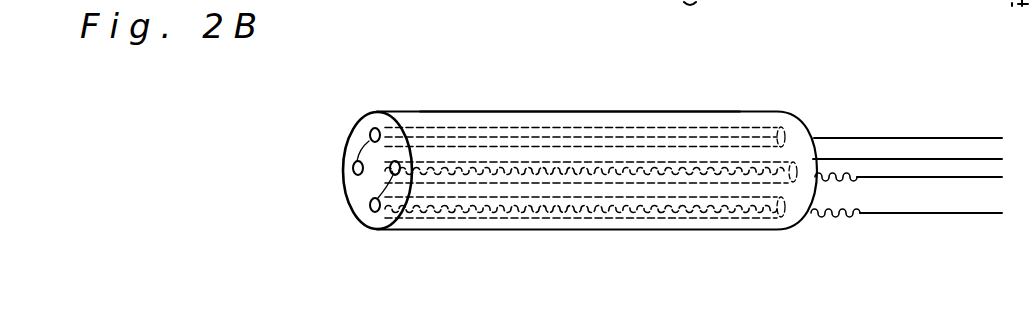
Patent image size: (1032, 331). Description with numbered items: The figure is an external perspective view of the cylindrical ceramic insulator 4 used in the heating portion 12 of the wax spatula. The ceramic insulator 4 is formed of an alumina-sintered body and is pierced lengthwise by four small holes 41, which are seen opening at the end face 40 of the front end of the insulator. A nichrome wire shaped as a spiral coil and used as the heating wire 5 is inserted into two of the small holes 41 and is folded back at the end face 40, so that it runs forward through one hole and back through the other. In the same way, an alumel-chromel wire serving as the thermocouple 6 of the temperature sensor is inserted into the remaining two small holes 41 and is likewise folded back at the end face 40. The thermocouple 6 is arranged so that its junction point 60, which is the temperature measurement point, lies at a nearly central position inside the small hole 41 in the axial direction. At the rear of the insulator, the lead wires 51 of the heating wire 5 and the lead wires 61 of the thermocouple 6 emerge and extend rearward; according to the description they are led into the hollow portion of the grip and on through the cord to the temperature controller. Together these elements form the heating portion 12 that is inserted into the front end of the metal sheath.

The ceramic insulator 4 is at (670, 111).
The heating wire 5 is at (497, 203).
The thermocouple 6 is at (447, 128).
The heating portion 12 is at (400, 112).
The end face 40 is at (355, 193).
The small holes 41 is at (371, 128).
The lead wires of the heating wire 51 is at (893, 214).
The junction point 60 is at (586, 135).
The lead wires of the thermocouple 61 is at (923, 159).